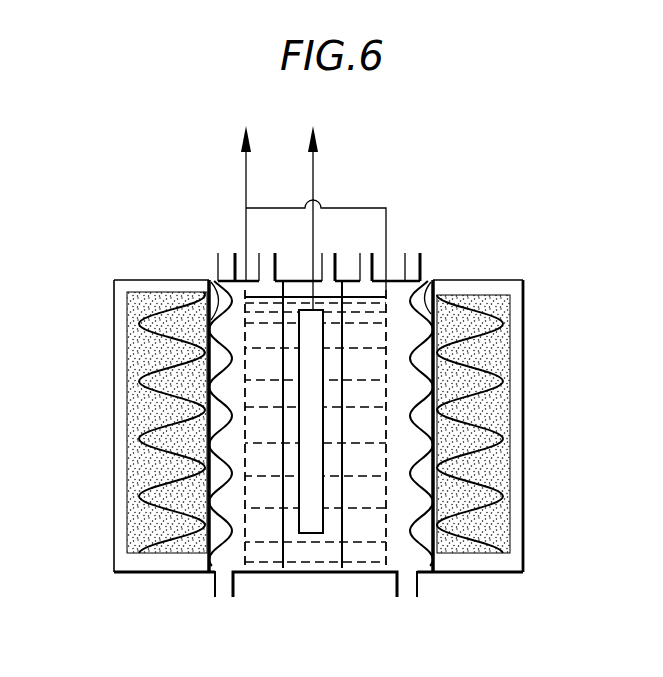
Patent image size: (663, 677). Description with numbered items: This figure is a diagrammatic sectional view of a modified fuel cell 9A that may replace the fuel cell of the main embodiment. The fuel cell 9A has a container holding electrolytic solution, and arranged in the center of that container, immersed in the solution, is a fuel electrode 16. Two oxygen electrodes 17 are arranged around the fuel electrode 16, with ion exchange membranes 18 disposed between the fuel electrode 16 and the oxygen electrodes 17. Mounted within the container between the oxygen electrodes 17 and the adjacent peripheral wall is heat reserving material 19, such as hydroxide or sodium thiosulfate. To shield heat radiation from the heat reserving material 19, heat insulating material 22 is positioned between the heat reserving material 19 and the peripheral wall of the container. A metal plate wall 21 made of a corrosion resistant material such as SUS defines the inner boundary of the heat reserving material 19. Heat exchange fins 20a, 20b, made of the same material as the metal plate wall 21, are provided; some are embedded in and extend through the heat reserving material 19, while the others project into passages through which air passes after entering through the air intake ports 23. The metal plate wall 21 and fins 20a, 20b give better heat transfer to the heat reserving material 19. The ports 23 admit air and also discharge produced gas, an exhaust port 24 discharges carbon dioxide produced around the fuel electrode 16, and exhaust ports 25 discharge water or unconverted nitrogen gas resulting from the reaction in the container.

The fuel cell 9A is at (194, 262).
The fuel electrode 16 is at (311, 528).
The oxygen electrodes 17 is at (243, 545).
The ion exchange membranes 18 is at (282, 548).
The heat reserving material 19 is at (137, 458).
The heat exchange fin 20a is at (165, 404).
The heat exchange fin 20b is at (212, 358).
The metal plate wall 21 is at (210, 290).
The heat insulating material 22 is at (123, 290).
The air intake ports 23 is at (227, 262).
The exhaust port 24 is at (330, 262).
The exhaust ports 25 is at (272, 262).